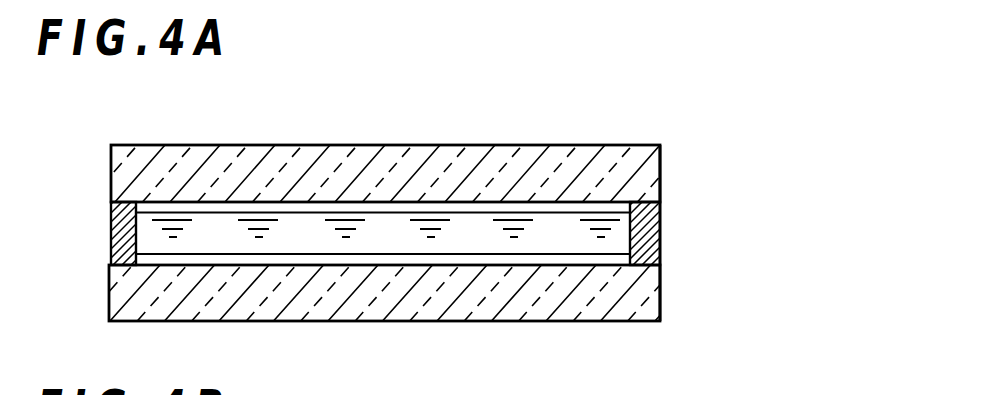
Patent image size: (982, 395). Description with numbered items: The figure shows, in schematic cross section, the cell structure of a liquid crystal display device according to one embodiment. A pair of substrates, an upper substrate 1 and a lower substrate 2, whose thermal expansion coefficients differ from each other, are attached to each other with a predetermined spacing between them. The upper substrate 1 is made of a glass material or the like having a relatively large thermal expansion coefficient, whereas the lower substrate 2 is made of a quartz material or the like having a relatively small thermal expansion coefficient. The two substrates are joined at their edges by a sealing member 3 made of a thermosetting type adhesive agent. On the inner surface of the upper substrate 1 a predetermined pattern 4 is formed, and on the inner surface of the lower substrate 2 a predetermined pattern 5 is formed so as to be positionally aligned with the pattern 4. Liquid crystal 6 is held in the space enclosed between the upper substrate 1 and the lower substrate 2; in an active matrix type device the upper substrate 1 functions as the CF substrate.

The upper substrate 1 is at (557, 147).
The lower substrate 2 is at (618, 322).
The sealing member 3 is at (659, 250).
The pattern 4 is at (262, 212).
The pattern 5 is at (335, 255).
The liquid crystal 6 is at (572, 214).